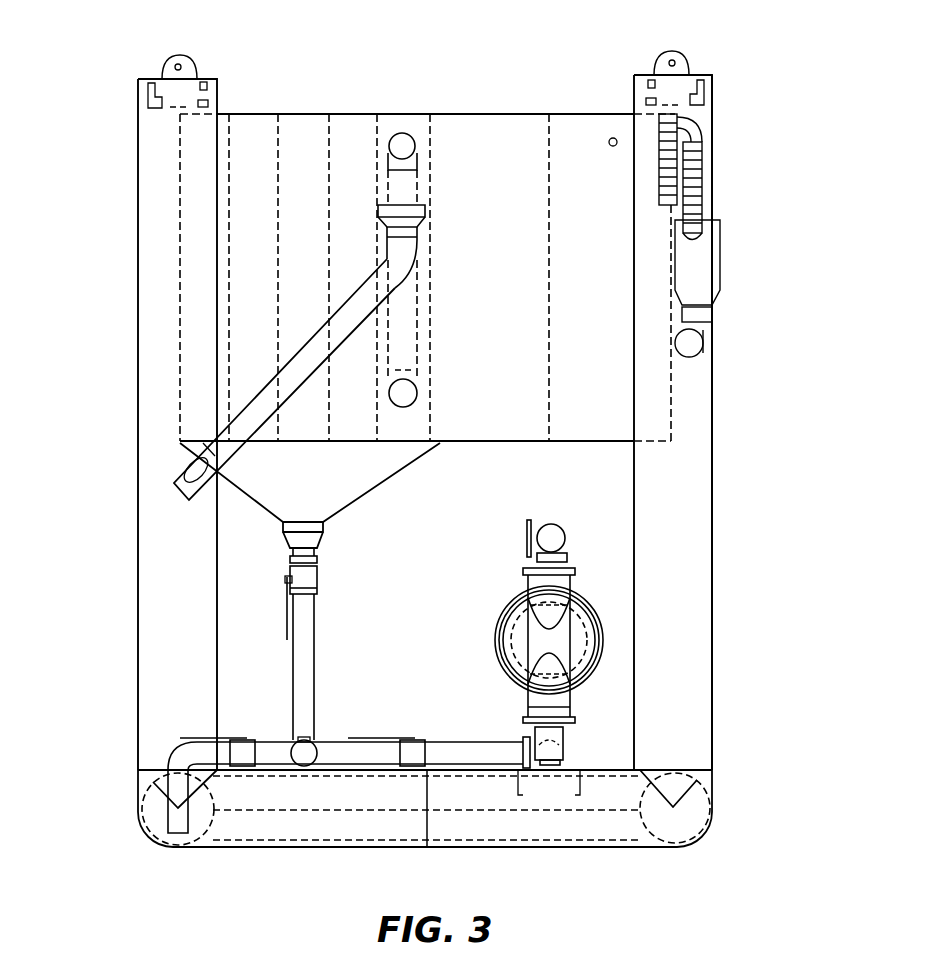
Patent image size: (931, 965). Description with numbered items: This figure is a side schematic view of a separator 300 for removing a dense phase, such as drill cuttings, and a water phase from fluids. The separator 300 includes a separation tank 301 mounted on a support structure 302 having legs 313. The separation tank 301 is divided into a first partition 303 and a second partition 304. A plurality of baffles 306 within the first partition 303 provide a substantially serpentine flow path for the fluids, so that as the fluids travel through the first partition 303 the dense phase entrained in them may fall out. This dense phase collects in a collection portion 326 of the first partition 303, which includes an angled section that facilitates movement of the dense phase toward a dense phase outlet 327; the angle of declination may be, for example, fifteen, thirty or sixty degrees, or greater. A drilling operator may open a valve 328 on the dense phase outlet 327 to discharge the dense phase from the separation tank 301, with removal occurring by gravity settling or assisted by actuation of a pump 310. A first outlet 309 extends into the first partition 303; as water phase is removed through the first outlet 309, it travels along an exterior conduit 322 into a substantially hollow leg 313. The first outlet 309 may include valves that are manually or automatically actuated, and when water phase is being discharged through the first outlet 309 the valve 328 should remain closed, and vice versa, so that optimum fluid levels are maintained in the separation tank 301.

The separator 300 is at (449, 55).
The separation tank 301 is at (490, 100).
The support structure 302 is at (686, 742).
The first partition 303 is at (315, 125).
The second partition 304 is at (535, 361).
The baffles 306 is at (178, 310).
The first outlet 309 is at (260, 385).
The pump 310 is at (575, 583).
The legs 313 is at (712, 610).
The exterior conduit 322 is at (430, 240).
The collection portion 326 is at (344, 467).
The dense phase outlet 327 is at (318, 580).
The valve 328 is at (287, 605).